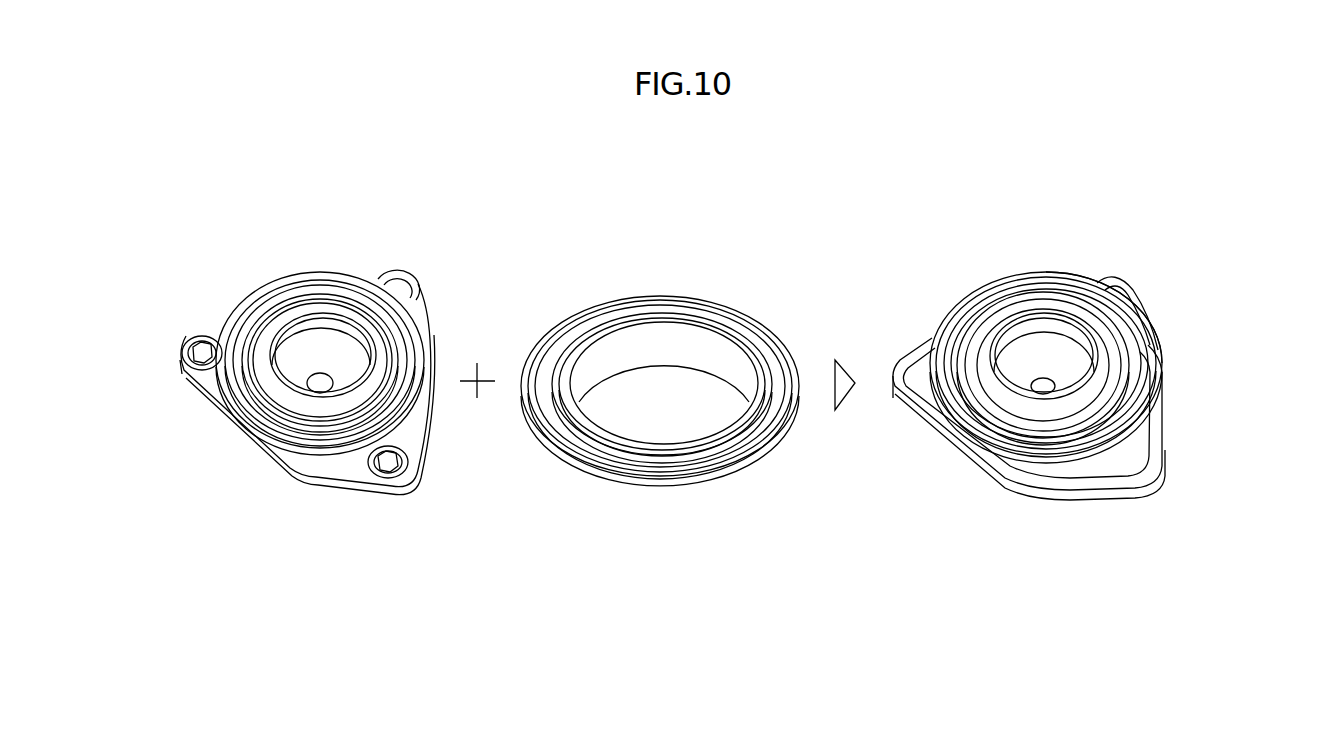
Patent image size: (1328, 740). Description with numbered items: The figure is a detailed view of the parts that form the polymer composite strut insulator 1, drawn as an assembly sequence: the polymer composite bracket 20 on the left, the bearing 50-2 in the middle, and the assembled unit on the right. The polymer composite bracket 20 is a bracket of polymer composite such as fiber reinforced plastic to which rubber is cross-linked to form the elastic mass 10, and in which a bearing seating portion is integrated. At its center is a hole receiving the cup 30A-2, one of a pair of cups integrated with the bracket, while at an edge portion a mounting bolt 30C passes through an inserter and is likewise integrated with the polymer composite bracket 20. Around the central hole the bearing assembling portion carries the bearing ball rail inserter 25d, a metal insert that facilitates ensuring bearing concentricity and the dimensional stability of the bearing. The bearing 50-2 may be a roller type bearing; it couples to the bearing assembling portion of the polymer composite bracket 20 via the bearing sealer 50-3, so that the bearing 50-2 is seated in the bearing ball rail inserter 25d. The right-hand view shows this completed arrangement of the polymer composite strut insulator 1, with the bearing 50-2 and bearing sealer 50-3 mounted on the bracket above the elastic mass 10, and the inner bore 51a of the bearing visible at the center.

The polymer composite strut insulator 1 is at (1156, 276).
The elastic mass 10 is at (238, 422).
The polymer composite bracket 20 is at (302, 475).
The bearing ball rail inserter 25d is at (405, 352).
The cup 30A-2 is at (333, 335).
The mounting bolt 30C is at (390, 460).
The bearing 50-2 is at (620, 306).
The bearing sealer 50-3 is at (726, 472).
The inner bore 51a is at (1033, 335).